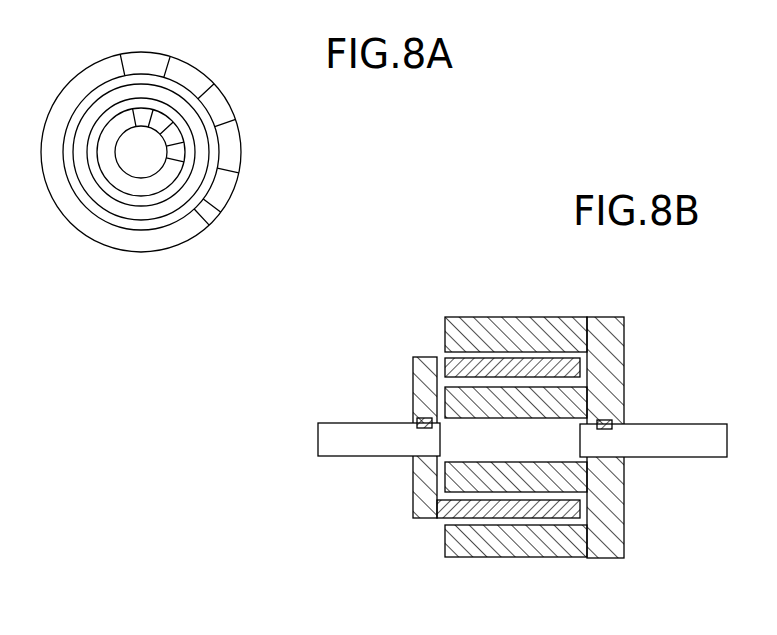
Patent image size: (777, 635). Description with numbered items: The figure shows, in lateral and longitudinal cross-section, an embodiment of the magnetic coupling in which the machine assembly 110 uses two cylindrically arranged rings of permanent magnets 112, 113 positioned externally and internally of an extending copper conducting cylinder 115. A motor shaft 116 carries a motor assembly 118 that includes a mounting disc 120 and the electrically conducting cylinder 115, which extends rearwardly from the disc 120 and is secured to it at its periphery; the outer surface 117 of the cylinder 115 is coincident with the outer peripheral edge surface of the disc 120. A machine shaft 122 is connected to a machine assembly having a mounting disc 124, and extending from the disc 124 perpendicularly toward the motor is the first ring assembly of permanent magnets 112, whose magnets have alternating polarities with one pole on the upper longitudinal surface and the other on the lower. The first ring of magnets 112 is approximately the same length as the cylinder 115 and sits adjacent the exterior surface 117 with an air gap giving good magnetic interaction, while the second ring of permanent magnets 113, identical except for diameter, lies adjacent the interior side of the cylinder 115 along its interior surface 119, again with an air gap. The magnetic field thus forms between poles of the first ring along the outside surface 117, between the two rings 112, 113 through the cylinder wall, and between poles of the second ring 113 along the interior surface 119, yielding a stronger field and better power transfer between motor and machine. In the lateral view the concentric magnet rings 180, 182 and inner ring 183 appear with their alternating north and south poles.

In FIG. 8B, the machine assembly 110 is at (591, 299).
In FIG. 8B, the first ring assembly of permanent magnets 112 is at (470, 316).
In FIG. 8B, the second ring assembly of permanent magnets 113 is at (455, 398).
In FIG. 8B, the copper conducting cylinder 115 is at (447, 366).
In FIG. 8B, the motor shaft 116 is at (342, 432).
In FIG. 8B, the outer surface of cylinder 117 is at (445, 508).
In FIG. 8B, the motor assembly 118 is at (415, 529).
In FIG. 8B, the interior surface of the conducting cylinder 119 is at (573, 510).
In FIG. 8B, the mounting disc 120 is at (413, 478).
In FIG. 8B, the machine shaft 122 is at (690, 430).
In FIG. 8B, the mounting disc 124 is at (612, 362).
In FIG. 8A, the intermediate ring 180 is at (200, 133).
In FIG. 8A, the outer magnet ring 182 is at (230, 140).
In FIG. 8A, the inner magnet ring 183 is at (165, 175).